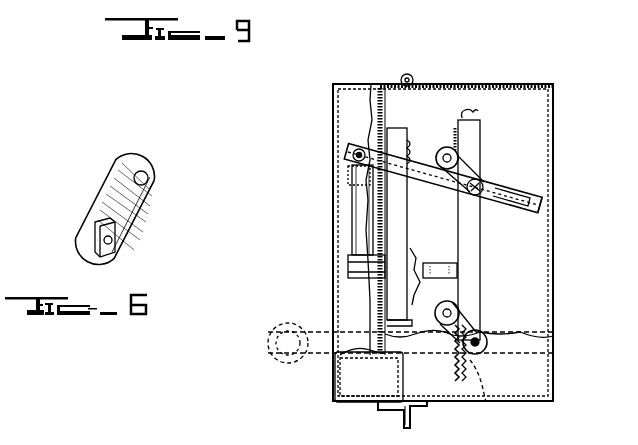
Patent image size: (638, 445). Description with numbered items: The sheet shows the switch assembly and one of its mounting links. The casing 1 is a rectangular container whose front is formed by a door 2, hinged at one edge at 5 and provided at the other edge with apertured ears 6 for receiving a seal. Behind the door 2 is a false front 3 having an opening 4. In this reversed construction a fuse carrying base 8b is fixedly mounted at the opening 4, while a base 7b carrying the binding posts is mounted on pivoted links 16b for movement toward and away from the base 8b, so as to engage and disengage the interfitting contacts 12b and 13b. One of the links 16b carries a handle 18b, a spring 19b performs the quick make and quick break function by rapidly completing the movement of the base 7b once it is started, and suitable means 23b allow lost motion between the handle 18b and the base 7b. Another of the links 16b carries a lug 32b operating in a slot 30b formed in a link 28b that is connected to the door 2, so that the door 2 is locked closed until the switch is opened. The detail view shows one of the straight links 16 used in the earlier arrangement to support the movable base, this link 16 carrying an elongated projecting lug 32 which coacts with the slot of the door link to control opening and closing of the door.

In FIG. 9, the casing 1 is at (553, 112).
In FIG. 9, the door 2 is at (343, 104).
In FIG. 9, the false front 3 is at (368, 364).
In FIG. 9, the opening 4 is at (378, 297).
In FIG. 9, the hinge 5 is at (411, 76).
In FIG. 9, the apertured ears 6 is at (402, 416).
In FIG. 9, the base carrying the binding posts 7b is at (470, 140).
In FIG. 9, the fuse carrying base 8b is at (398, 222).
In FIG. 9, the contacts 12b is at (460, 270).
In FIG. 9, the contacts 13b is at (418, 262).
In FIG. 9, the pivoted links 16b is at (458, 160).
In FIG. 9, the handle 18b is at (322, 348).
In FIG. 9, the spring 19b is at (488, 405).
In FIG. 9, the lost motion means 23b is at (488, 348).
In FIG. 9, the link 28b is at (353, 153).
In FIG. 9, the slot 30b is at (540, 206).
In FIG. 9, the lug 32b is at (530, 183).
In FIG. 6, the links 16 is at (118, 198).
In FIG. 6, the lug 32 is at (116, 250).